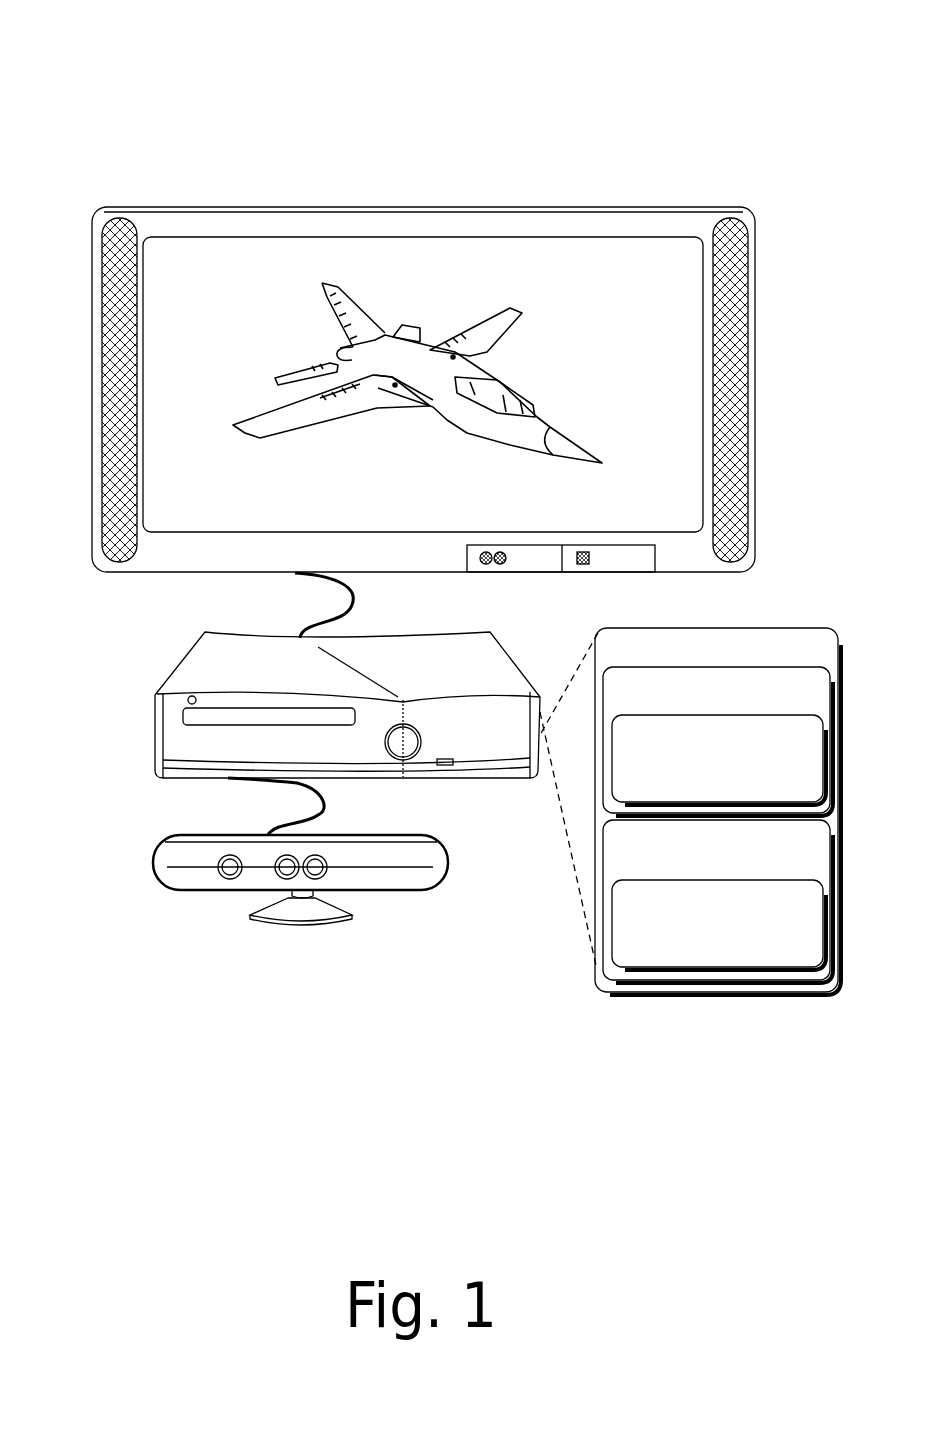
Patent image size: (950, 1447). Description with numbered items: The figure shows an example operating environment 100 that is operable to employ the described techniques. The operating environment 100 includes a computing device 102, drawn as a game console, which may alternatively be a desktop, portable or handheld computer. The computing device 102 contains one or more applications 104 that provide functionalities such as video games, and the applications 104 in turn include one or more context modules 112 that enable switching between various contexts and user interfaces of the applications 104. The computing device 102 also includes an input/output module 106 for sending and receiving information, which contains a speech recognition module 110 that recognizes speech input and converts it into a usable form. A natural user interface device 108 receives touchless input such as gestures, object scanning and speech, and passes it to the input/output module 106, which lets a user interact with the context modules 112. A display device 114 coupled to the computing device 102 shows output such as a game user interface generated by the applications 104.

The operating environment 100 is at (126, 64).
The computing device 102 is at (827, 656).
The applications 104 is at (805, 698).
The input/output module 106 is at (775, 876).
The natural user interface (NUI) device 108 is at (303, 834).
The speech recognition module 110 is at (699, 958).
The context modules 112 is at (699, 780).
The display device 114 is at (107, 207).